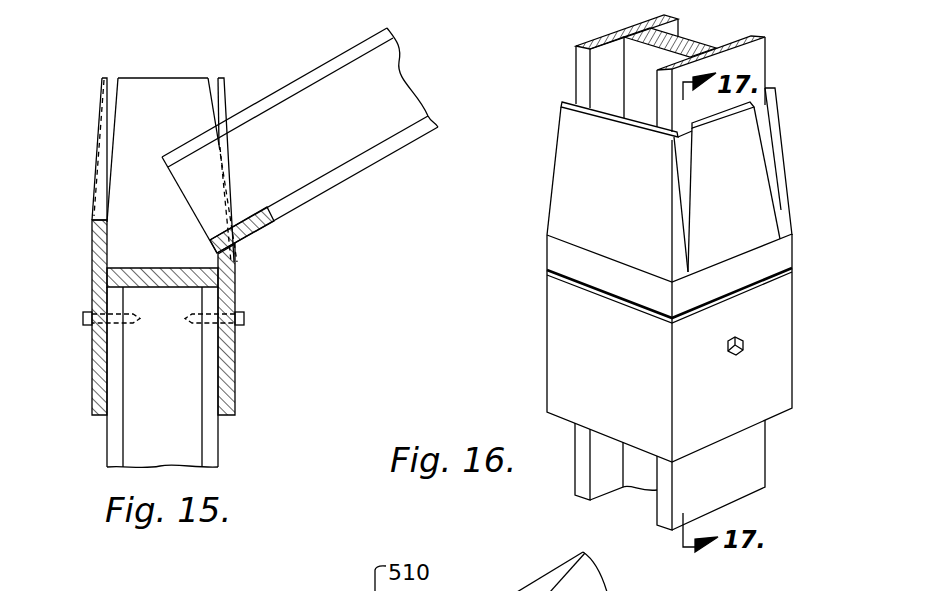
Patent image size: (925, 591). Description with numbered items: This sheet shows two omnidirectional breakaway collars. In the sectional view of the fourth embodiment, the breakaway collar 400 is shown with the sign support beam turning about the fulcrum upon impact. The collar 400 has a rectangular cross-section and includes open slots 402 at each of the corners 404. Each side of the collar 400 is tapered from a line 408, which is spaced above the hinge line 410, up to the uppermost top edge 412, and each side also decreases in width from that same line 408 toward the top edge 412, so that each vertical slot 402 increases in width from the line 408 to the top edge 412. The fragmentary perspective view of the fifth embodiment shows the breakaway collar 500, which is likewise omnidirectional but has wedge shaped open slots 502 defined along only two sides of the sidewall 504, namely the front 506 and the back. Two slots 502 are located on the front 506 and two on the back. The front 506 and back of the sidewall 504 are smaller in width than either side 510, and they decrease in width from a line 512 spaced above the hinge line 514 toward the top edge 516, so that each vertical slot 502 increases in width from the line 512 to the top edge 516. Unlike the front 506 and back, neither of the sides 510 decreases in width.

In FIG. 15, the breakaway collar 400 is at (232, 402).
In FIG. 15, the open slots 402 is at (108, 77).
In FIG. 15, the corners 404 is at (92, 221).
In FIG. 15, the line 408 is at (268, 244).
In FIG. 15, the hinge line 410 is at (92, 261).
In FIG. 15, the top edge 412 is at (151, 78).
In FIG. 16, the breakaway collar 500 is at (787, 395).
In FIG. 16, the wedge shaped open slots 502 is at (772, 92).
In FIG. 16, the sidewall 504 is at (571, 123).
In FIG. 16, the front 506 is at (748, 198).
In FIG. 16, the sides 510 is at (578, 177).
In FIG. 16, the line 512 is at (547, 237).
In FIG. 16, the hinge line 514 is at (548, 272).
In FIG. 16, the top edge 516 is at (573, 102).